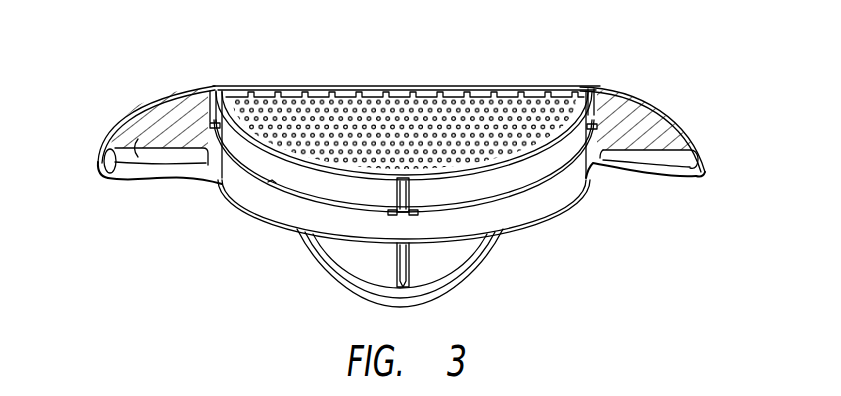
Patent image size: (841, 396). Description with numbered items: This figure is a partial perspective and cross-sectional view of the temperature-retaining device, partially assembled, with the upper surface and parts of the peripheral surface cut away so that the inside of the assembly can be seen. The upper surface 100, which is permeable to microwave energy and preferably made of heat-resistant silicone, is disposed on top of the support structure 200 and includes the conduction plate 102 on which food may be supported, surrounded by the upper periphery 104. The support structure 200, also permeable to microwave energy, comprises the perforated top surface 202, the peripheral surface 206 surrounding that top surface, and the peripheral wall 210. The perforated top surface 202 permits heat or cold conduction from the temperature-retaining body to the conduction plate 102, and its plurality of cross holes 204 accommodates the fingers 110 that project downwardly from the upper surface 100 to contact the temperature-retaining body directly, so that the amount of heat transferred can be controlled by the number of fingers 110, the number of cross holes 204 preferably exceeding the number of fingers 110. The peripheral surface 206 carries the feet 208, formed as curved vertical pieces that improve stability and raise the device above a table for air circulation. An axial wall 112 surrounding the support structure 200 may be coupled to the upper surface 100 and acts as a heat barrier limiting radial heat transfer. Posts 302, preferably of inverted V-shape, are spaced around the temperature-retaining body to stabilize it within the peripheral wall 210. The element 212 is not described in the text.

The upper surface 100 is at (221, 86).
The conduction plate 102 is at (405, 102).
The upper periphery 104 is at (132, 116).
The fingers 110 is at (491, 90).
The axial wall 112 is at (606, 98).
The support structure 200 is at (508, 185).
The perforated top surface 202 is at (263, 142).
The cross holes 204 is at (312, 110).
The peripheral surface 206 is at (650, 142).
The feet 208 is at (110, 177).
The peripheral wall 210 is at (263, 200).
The post 212 is at (597, 119).
The posts 302 is at (410, 194).